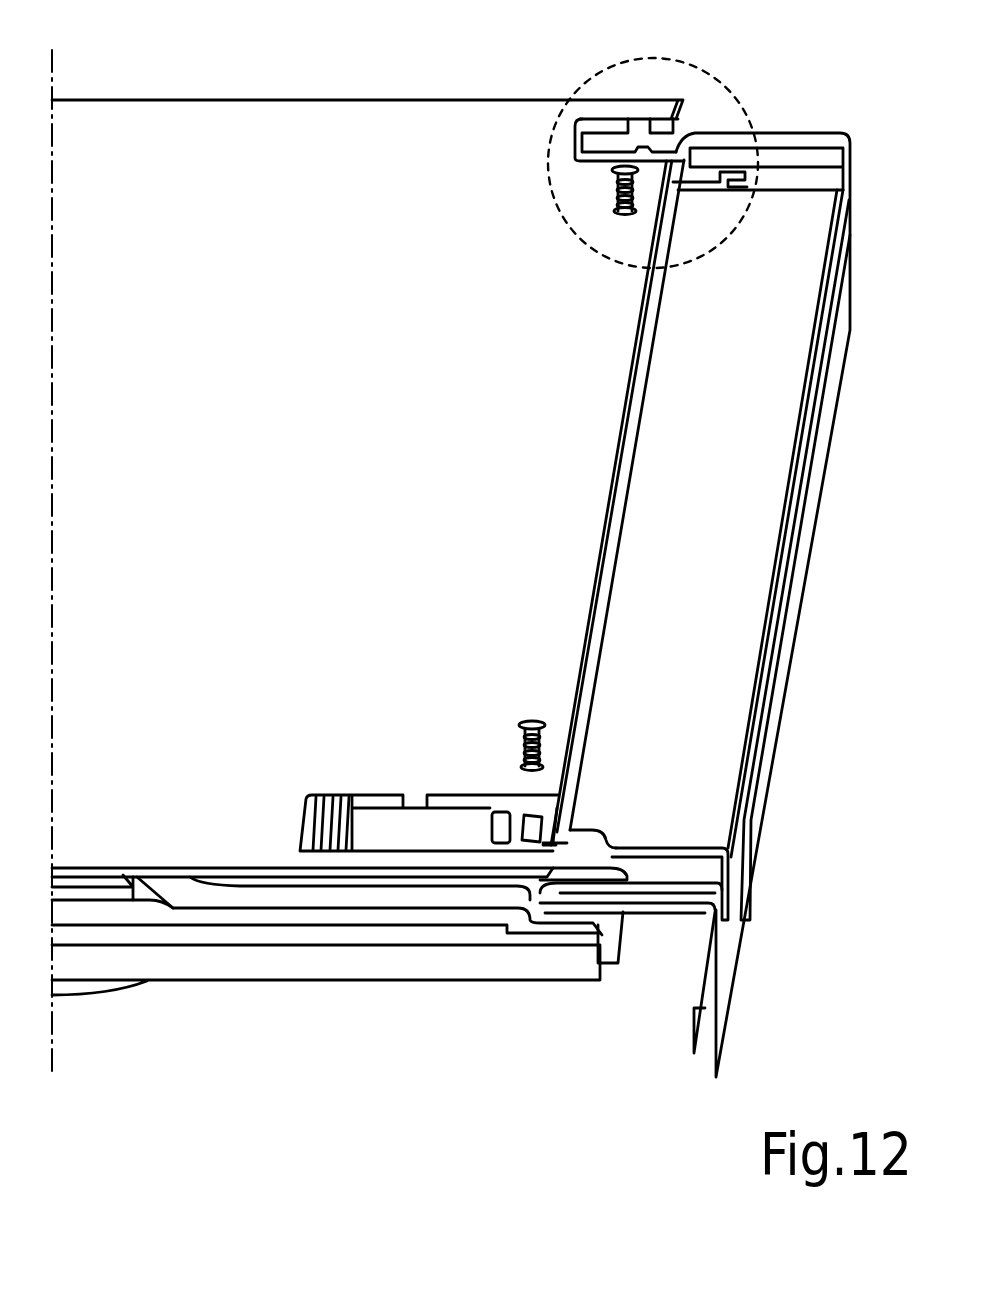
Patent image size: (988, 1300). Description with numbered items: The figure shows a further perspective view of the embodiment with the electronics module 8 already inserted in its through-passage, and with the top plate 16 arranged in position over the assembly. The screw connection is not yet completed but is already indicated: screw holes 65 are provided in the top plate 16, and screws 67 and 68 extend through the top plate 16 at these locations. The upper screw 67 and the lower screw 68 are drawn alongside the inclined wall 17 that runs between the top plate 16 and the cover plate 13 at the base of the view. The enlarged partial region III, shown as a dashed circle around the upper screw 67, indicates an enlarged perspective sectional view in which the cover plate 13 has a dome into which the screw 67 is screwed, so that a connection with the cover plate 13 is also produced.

The top plate 16 is at (231, 130).
The screw 67 is at (624, 167).
The screw hole 65 is at (613, 212).
The screw 68 is at (532, 721).
The inclined rear wall 17 is at (755, 523).
The electronics module 8 is at (777, 733).
The cover plate 13 is at (368, 1000).
The partial region III is at (737, 98).